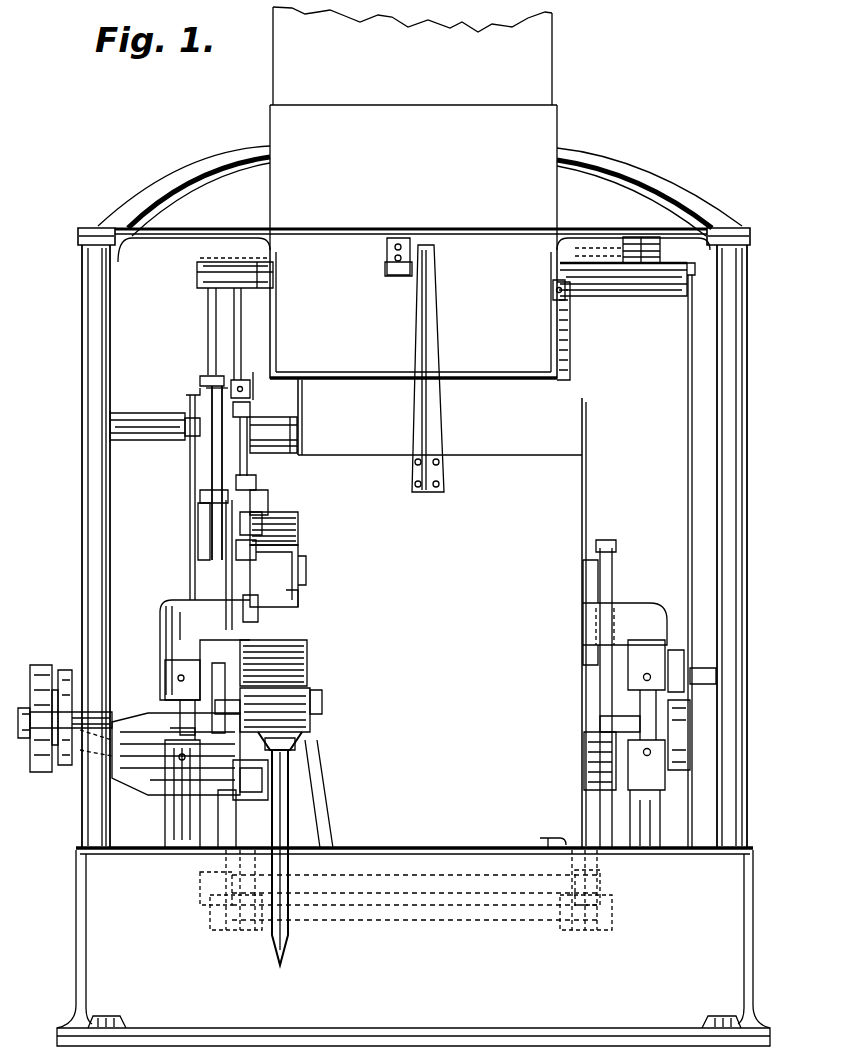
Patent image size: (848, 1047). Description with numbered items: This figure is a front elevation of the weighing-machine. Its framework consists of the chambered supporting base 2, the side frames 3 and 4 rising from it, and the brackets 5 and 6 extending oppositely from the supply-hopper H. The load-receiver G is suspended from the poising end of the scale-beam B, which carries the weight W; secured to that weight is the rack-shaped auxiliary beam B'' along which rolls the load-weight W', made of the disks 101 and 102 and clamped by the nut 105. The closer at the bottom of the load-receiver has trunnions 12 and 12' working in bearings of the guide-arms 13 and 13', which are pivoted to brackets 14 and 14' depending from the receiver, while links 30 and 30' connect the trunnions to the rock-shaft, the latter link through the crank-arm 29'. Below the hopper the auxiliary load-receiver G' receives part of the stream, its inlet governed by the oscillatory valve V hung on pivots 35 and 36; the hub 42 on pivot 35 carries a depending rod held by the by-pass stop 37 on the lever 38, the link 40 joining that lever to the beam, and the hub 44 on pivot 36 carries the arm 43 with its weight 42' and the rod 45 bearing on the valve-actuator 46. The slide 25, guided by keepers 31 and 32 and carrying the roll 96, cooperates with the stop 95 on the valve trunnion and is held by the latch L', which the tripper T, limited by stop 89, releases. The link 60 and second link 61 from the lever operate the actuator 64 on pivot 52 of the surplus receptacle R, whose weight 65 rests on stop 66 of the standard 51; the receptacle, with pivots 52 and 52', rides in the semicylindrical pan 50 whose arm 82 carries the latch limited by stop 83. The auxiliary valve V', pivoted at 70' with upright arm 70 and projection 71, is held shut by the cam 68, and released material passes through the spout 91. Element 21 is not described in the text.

The supporting base 2 is at (413, 947).
The side frame 3 is at (97, 374).
The side frame 4 is at (724, 396).
The bracket 5 is at (202, 180).
The bracket 6 is at (626, 178).
The supply-hopper H is at (413, 192).
The load-receiver G is at (442, 546).
The valve V is at (576, 331).
The valve-pivot 36 is at (553, 282).
The arm 43 is at (660, 254).
The weight 42' is at (599, 250).
The hub 44 is at (648, 298).
The rod 45 is at (688, 437).
The valve-pivot 35 is at (197, 274).
The hub 42 is at (235, 250).
The by-pass stop 37 is at (207, 366).
The stop 95 is at (241, 326).
The roll 96 is at (253, 382).
The keeper 31 is at (250, 410).
The link 60 is at (220, 444).
The slide 25 is at (278, 442).
The lever 38 is at (190, 428).
The tripper T is at (212, 460).
The keeper 32 is at (256, 480).
The cam 68 is at (256, 500).
The stop 89 is at (200, 494).
The latch L' is at (169, 528).
The link 40 is at (190, 516).
The projection 71 is at (258, 516).
The auxiliary load-receiver G' is at (287, 528).
The upright arm 70 is at (255, 565).
The pivot 70' is at (297, 576).
The valve V' is at (311, 596).
The stop 83 is at (254, 612).
The link 61 is at (226, 632).
The surplus-receiving receptacle R is at (284, 661).
The arm 82 is at (240, 652).
The pivot 52 is at (177, 692).
The actuator 64 is at (226, 706).
The pivot 52' is at (332, 693).
The semicylindrical pan 50 is at (310, 722).
The weight 65 is at (250, 745).
The stop 66 is at (250, 794).
The post 21 is at (220, 822).
The standard 51 is at (284, 818).
The bracket 14 is at (288, 788).
The spout 91 is at (344, 788).
The link 30 is at (201, 830).
The load-weight W' is at (46, 725).
The disk 102 is at (44, 666).
The disk 101 is at (66, 668).
The clamp 105 is at (22, 706).
The auxiliary beam B'' is at (71, 702).
The crank-arm 29' is at (622, 694).
The link 30' is at (607, 637).
The scale-beam B is at (600, 728).
The weight W is at (587, 761).
The valve-actuator 46 is at (674, 736).
The bracket 14' is at (546, 833).
The trunnion 12 is at (193, 888).
The guide-arm 13 is at (214, 912).
The trunnion 12' is at (612, 886).
The guide-arm 13' is at (604, 911).